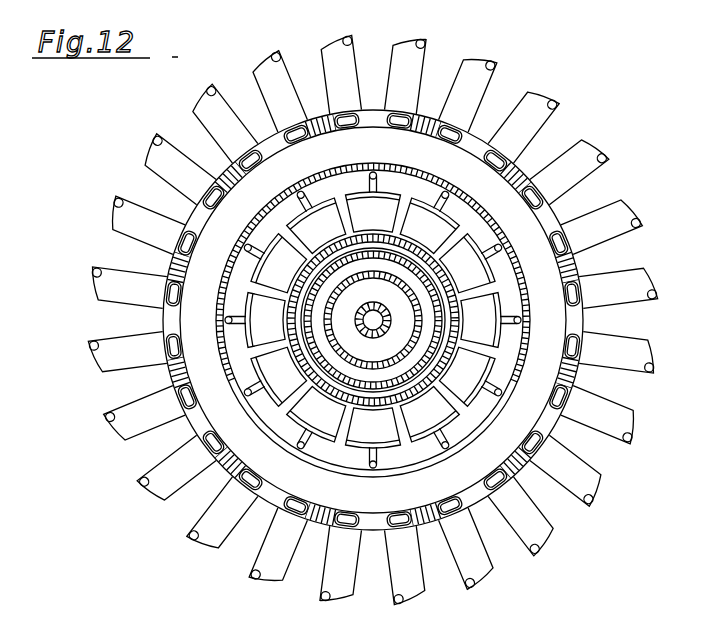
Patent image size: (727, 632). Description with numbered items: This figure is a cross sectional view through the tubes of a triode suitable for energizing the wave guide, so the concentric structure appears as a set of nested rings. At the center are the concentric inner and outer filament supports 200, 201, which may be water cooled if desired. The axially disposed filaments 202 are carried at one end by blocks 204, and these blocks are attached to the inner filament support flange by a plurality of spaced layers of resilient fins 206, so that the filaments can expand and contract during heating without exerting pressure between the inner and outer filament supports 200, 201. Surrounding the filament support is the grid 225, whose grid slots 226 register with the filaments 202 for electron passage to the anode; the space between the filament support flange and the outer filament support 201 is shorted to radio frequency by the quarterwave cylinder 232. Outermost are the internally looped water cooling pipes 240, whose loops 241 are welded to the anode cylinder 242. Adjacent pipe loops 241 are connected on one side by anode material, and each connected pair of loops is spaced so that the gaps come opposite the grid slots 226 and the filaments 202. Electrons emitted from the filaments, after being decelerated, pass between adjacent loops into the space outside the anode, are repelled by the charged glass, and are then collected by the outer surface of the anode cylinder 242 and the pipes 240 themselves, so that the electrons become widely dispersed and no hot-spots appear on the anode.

The inner filament support 200 is at (353, 362).
The outer filament support 201 is at (527, 480).
The filaments 202 is at (515, 321).
The blocks 204 is at (457, 373).
The resilient fins 206 is at (433, 380).
The grid 225 is at (527, 278).
The grid slots 226 is at (517, 223).
The quarterwave cylinder 232 is at (316, 361).
The water cooling pipes 240 is at (541, 131).
The pipe loops 241 is at (482, 138).
The anode cylinder 242 is at (428, 108).